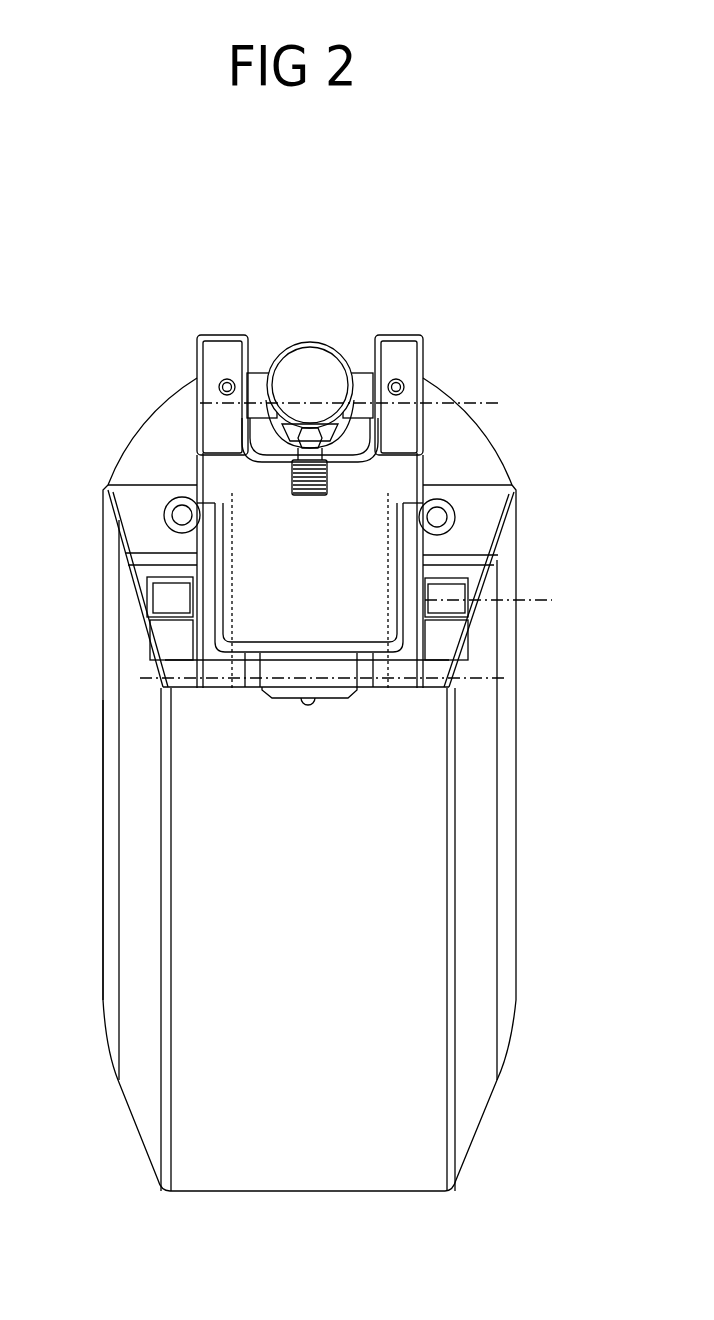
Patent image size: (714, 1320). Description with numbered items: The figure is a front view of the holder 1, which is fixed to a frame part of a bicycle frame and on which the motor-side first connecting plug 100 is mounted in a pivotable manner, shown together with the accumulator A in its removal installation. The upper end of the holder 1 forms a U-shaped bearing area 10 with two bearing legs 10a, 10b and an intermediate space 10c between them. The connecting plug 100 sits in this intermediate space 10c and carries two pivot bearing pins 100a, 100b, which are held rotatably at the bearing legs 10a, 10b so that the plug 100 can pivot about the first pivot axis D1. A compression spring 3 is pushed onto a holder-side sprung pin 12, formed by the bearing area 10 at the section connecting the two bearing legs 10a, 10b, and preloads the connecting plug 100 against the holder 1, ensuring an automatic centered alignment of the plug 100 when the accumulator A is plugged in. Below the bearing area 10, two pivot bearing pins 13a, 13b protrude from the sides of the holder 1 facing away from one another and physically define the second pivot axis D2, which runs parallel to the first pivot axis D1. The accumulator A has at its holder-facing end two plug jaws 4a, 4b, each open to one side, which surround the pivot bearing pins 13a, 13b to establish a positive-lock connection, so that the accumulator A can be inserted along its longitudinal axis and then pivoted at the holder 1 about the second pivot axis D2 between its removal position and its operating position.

The holder 1 is at (183, 368).
The accumulator A is at (513, 745).
The bearing area 10 is at (369, 457).
The bearing leg 10a is at (226, 338).
The bearing leg 10b is at (423, 366).
The intermediate space 10c is at (378, 437).
The motor-side first connecting plug 100 is at (305, 358).
The pivot bearing pin 100a is at (246, 426).
The pivot bearing pin 100b is at (366, 383).
The compression spring 3 is at (327, 470).
The holder-side sprung pin 12 is at (306, 496).
The plug jaw 4a is at (140, 582).
The plug jaw 4b is at (497, 577).
The pivot bearing pin 13a is at (157, 622).
The pivot bearing pin 13b is at (455, 610).
The first pivot axis D1 is at (470, 403).
The second pivot axis D2 is at (510, 600).